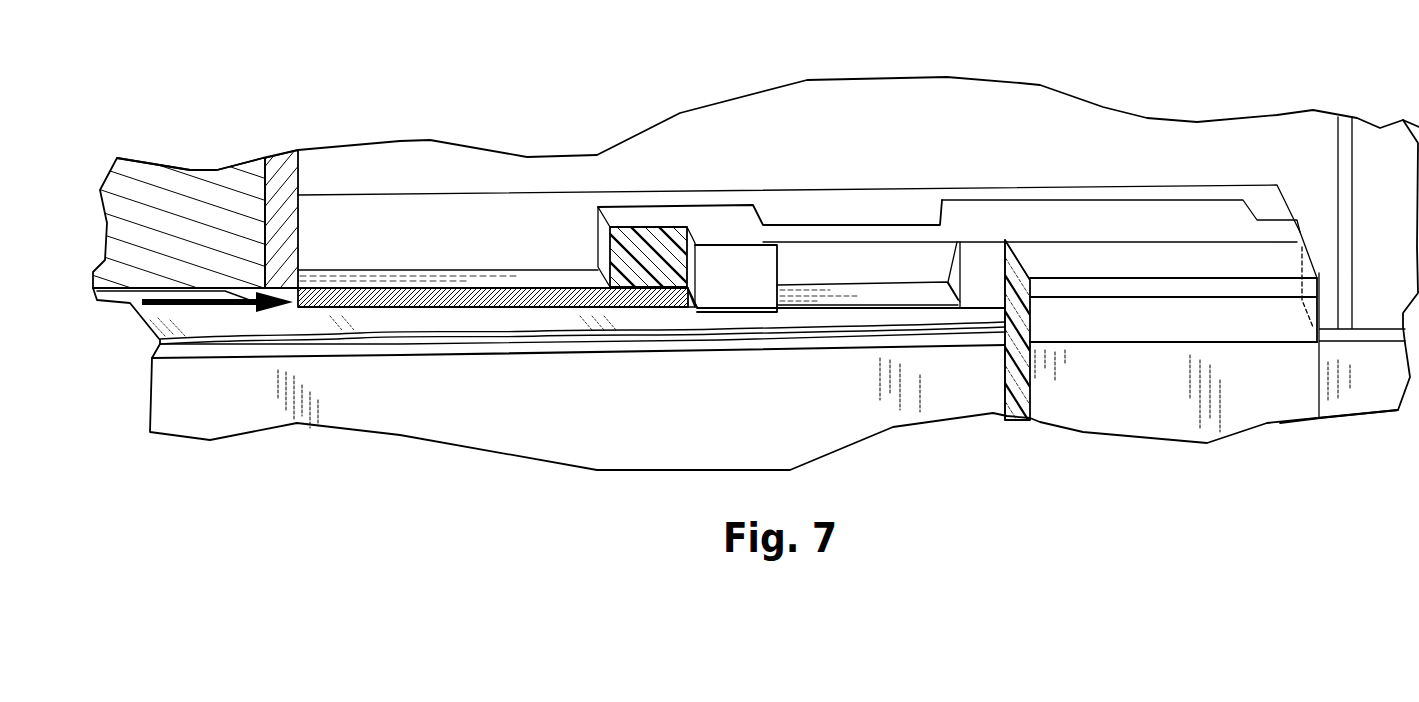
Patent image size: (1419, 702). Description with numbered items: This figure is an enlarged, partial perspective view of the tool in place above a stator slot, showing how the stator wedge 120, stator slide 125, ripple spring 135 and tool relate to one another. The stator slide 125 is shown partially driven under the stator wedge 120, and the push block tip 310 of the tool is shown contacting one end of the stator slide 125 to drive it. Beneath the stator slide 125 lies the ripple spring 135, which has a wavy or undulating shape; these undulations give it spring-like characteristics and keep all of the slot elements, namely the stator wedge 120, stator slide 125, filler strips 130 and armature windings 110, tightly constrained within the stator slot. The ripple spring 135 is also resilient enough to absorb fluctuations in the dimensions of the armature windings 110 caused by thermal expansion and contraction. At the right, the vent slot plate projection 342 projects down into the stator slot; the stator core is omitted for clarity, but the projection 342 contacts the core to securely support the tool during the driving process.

The armature windings 110 is at (172, 396).
The stator wedge 120 is at (720, 215).
The stator slide 125 is at (548, 292).
The filler strips 130 is at (832, 355).
The ripple spring 135 is at (445, 318).
The push block tip 310 is at (287, 240).
The vent slot plate projection 342 is at (1322, 304).